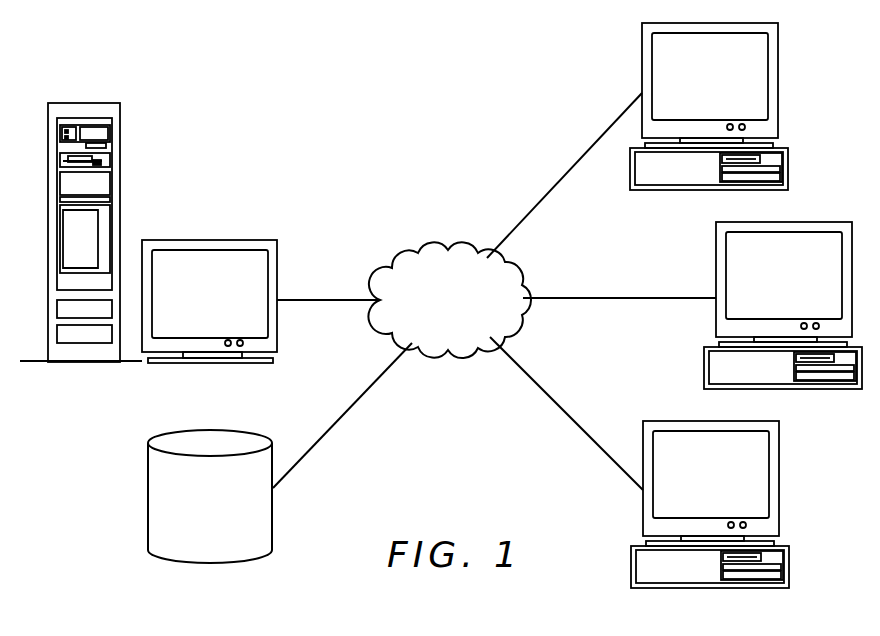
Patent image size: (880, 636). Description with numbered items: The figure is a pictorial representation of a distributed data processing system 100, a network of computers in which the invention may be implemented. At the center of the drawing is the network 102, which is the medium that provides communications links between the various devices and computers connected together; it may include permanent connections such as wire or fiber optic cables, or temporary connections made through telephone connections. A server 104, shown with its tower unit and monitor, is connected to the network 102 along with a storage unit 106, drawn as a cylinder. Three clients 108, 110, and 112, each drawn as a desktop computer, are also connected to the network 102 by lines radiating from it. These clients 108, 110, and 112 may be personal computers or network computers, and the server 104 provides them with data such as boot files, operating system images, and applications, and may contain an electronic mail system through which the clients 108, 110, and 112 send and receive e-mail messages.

The distributed data processing system 100 is at (347, 78).
The network 102 is at (468, 326).
The server 104 is at (230, 301).
The storage unit 106 is at (230, 537).
The client 108 is at (732, 91).
The client 110 is at (807, 291).
The client 112 is at (733, 489).